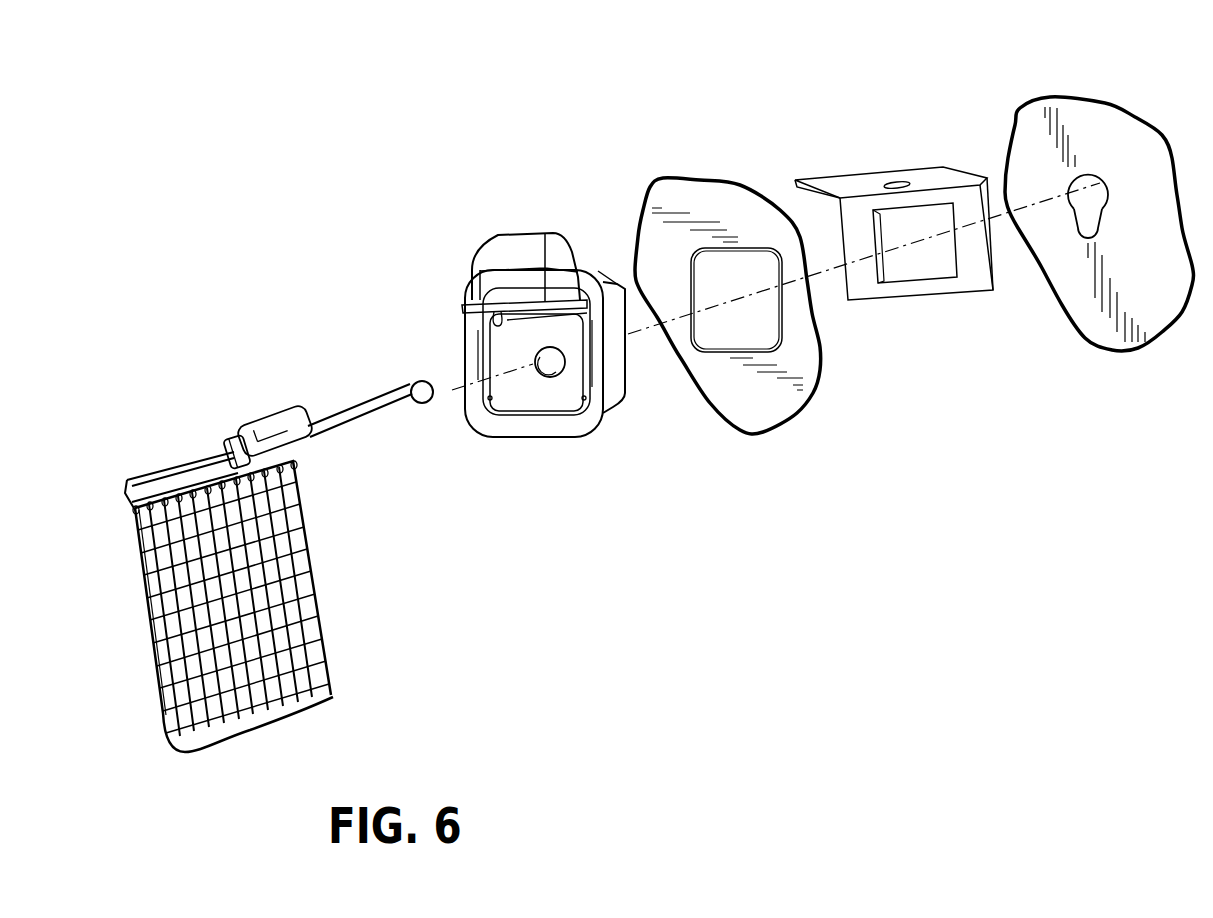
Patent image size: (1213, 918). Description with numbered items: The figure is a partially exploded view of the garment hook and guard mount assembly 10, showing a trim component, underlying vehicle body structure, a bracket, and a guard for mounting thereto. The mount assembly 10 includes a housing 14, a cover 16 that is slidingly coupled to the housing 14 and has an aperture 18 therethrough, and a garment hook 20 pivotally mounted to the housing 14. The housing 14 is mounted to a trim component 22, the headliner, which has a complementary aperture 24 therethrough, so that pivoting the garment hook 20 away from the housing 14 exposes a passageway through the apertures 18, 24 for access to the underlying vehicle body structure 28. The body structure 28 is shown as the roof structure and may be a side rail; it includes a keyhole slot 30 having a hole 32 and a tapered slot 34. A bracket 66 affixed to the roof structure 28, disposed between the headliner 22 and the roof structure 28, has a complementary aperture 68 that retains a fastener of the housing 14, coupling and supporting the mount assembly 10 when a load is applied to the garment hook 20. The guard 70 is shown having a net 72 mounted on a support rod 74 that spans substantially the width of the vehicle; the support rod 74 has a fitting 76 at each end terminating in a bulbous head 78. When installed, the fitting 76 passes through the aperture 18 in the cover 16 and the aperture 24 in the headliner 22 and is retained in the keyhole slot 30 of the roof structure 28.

The garment hook and guard mount assembly 10 is at (524, 345).
The housing 14 is at (602, 278).
The cover 16 is at (512, 390).
The aperture 18 is at (553, 370).
The garment hook 20 is at (477, 247).
The trim component 22 is at (714, 298).
The complementary aperture 24 is at (735, 320).
The underlying vehicle body structure 28 is at (1099, 199).
The keyhole slot 30 is at (1093, 199).
The hole 32 is at (1098, 185).
The tapered slot 34 is at (1087, 228).
The bracket 66 is at (889, 198).
The complementary aperture 68 is at (910, 185).
The guard 70 is at (279, 536).
The net 72 is at (313, 590).
The support rod 74 is at (203, 465).
The fitting 76 is at (350, 405).
The bulbous head 78 is at (420, 404).